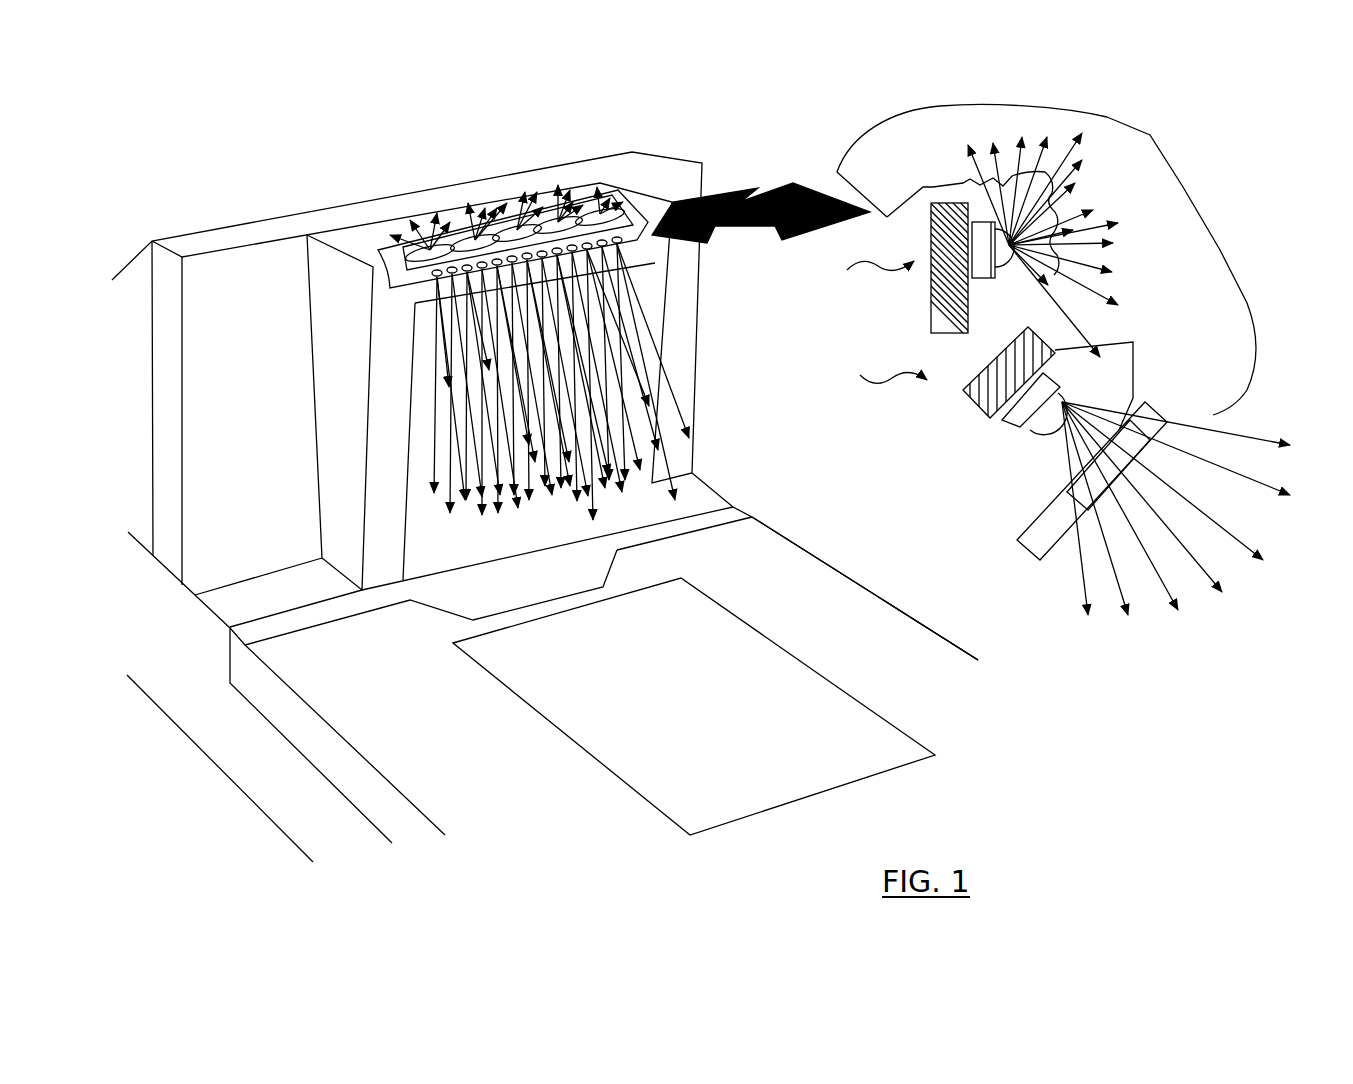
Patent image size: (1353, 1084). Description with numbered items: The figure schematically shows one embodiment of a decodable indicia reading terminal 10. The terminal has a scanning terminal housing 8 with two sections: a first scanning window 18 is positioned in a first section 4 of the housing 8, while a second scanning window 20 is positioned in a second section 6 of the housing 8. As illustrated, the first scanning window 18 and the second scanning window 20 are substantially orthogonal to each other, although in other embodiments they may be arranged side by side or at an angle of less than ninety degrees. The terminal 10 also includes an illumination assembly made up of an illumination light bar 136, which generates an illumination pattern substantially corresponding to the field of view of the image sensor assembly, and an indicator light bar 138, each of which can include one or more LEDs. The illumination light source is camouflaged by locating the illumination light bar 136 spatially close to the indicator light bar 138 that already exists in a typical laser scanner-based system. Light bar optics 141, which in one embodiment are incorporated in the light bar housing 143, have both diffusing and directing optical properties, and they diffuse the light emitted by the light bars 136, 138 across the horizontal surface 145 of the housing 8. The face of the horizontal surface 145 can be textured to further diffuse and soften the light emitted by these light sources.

The decodable indicia reading terminal 10 is at (314, 162).
The first section 4 is at (208, 237).
The light bar housing 143 is at (400, 250).
The first scanning window 18 is at (520, 320).
The second scanning window 20 is at (748, 623).
The horizontal surface 145 is at (832, 612).
The second section 6 is at (898, 607).
The scanning terminal housing 8 is at (227, 743).
The indicator light bar 138 is at (968, 220).
The illumination light bar 136 is at (1040, 338).
The light bar optics 141 is at (1147, 422).